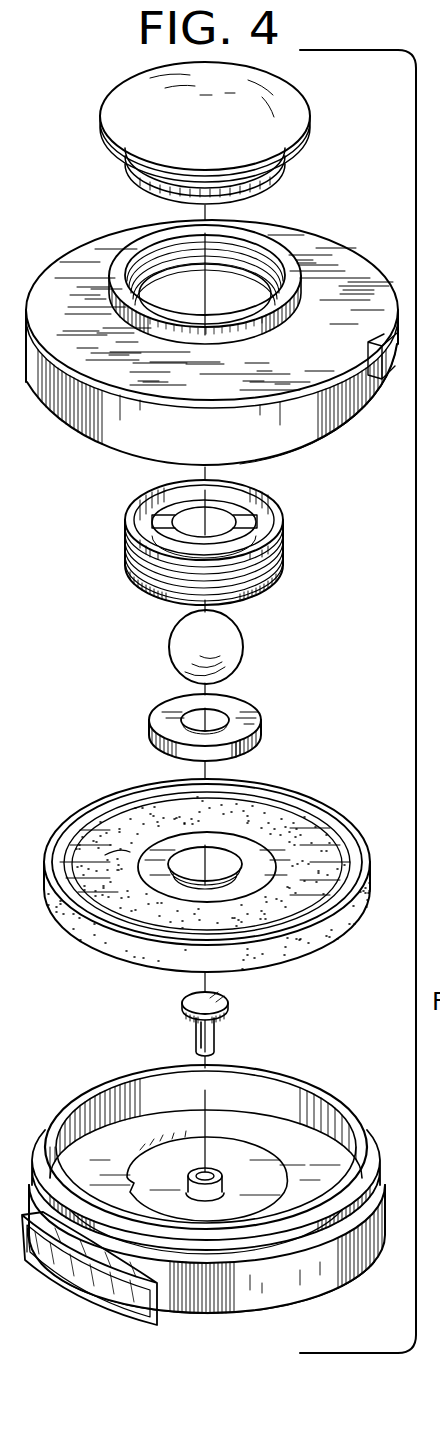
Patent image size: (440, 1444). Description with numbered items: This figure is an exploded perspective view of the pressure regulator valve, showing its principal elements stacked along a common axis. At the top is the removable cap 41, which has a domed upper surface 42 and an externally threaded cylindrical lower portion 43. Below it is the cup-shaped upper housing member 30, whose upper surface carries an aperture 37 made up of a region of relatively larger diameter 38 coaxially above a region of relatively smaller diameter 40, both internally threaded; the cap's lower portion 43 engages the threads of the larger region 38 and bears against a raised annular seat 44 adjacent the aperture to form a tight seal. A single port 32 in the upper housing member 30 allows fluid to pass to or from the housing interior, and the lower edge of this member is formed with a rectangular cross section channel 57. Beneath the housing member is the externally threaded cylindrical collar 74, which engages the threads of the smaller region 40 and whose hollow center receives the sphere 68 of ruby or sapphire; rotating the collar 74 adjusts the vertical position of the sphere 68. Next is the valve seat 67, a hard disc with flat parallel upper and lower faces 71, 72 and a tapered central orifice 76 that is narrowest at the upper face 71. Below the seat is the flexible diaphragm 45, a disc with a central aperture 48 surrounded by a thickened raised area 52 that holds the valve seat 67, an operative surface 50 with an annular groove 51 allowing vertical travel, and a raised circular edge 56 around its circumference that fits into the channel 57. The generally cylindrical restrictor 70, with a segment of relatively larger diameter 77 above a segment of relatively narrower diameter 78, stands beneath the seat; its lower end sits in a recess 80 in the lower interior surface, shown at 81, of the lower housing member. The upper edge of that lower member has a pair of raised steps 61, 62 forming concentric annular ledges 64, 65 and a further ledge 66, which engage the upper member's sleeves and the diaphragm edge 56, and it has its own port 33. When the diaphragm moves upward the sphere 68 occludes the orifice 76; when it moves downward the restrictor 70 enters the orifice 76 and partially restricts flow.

The upper housing member 30 is at (211, 336).
The port 32 is at (395, 362).
The port 33 is at (68, 1280).
The aperture 37 is at (219, 263).
The region of relatively larger diameter 38 is at (252, 244).
The region of relatively smaller diameter 40 is at (162, 280).
The removable cap 41 is at (204, 134).
The domed upper surface 42 is at (282, 118).
The externally threaded cylindrical lower portion 43 is at (147, 190).
The raised annular seat 44 is at (295, 284).
The diaphragm 45 is at (207, 862).
The aperture 48 is at (225, 858).
The operative surface 50 is at (123, 840).
The annular groove 51 is at (120, 898).
The raised area 52 is at (258, 862).
The raised circular edge 56 is at (58, 840).
The rectangular cross section channel 57 is at (305, 452).
The raised step 61 is at (268, 1246).
The raised step 62 is at (215, 1237).
The annular ledge 64 is at (335, 1238).
The annular ledge 65 is at (216, 1205).
The base rim 66 is at (315, 1086).
The valve seat 67 is at (199, 712).
The sphere 68 is at (236, 636).
The restrictor 70 is at (209, 1024).
The upper face 71 is at (243, 710).
The lower face 72 is at (257, 750).
The cylindrical collar 74 is at (125, 545).
The orifice 76 is at (195, 715).
The segment of relatively larger diameter 77 is at (185, 1010).
The segment of relatively narrower diameter 78 is at (200, 1035).
The recess 80 is at (212, 1172).
The cavity 81 is at (125, 1150).